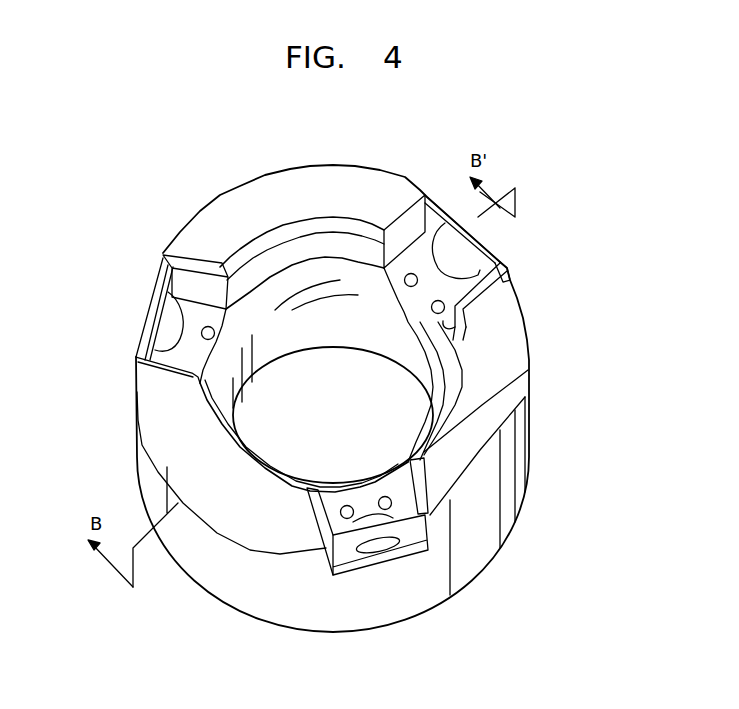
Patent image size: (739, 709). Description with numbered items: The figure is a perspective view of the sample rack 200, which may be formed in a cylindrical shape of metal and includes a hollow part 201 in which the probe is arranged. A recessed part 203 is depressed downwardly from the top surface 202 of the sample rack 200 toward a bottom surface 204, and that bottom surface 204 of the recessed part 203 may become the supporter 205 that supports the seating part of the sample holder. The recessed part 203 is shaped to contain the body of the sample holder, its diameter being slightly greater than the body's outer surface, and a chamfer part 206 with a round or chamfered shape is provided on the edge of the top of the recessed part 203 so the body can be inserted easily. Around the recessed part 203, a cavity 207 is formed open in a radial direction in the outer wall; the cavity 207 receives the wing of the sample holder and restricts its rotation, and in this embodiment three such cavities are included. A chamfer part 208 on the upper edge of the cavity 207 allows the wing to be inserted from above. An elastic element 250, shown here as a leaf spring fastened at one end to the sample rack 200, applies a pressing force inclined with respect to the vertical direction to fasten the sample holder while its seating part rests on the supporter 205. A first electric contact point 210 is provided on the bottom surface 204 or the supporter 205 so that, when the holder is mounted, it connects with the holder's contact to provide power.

The sample rack 200 is at (530, 226).
The hollow part 201 is at (322, 421).
The top surface 202 is at (292, 180).
The recessed part 203 is at (468, 306).
The bottom surface 204 is at (535, 317).
The supporter 205 is at (539, 339).
The chamfer part 206 is at (243, 253).
The cavity 207 is at (138, 346).
The chamfer part 208 is at (193, 260).
The first electric contact point 210 is at (347, 522).
The elastic element 250 is at (150, 319).